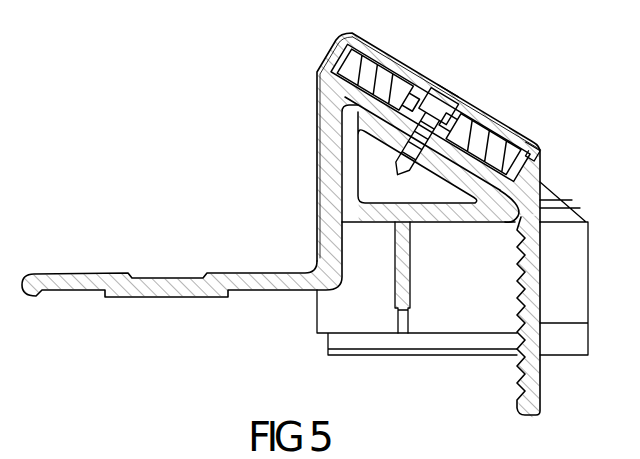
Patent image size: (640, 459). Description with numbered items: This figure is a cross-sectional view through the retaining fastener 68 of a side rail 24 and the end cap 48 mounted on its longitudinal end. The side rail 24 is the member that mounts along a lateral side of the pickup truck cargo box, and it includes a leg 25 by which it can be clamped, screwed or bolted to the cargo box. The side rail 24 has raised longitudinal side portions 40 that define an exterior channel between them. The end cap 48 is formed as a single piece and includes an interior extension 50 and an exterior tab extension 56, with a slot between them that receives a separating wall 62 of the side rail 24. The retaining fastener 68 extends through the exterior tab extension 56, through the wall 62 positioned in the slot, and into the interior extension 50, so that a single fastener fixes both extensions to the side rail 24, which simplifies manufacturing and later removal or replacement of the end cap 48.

The raised longitudinal side portion 40 is at (356, 42).
The wall 62 is at (392, 70).
The retaining fastener 68 is at (456, 72).
The interior extension 50 is at (355, 113).
The exterior tab extension 56 is at (505, 124).
The side rail 24 is at (270, 240).
The end cap 48 is at (352, 295).
The leg 25 is at (520, 378).